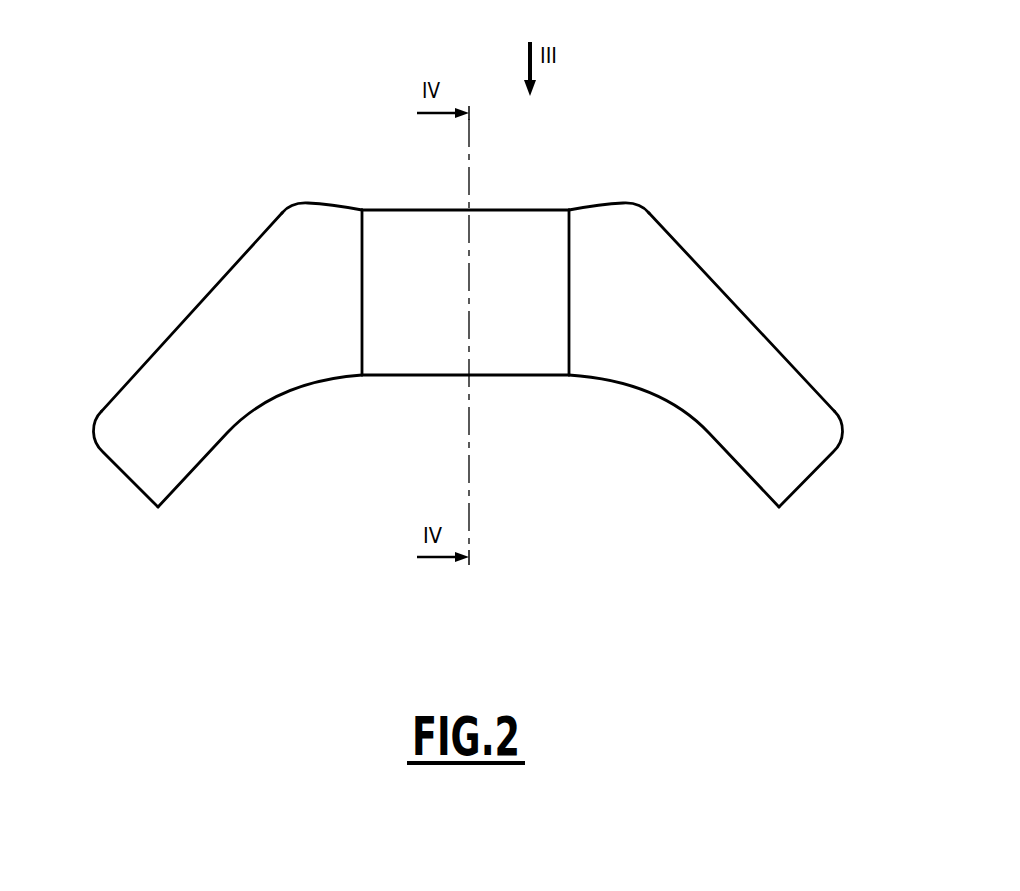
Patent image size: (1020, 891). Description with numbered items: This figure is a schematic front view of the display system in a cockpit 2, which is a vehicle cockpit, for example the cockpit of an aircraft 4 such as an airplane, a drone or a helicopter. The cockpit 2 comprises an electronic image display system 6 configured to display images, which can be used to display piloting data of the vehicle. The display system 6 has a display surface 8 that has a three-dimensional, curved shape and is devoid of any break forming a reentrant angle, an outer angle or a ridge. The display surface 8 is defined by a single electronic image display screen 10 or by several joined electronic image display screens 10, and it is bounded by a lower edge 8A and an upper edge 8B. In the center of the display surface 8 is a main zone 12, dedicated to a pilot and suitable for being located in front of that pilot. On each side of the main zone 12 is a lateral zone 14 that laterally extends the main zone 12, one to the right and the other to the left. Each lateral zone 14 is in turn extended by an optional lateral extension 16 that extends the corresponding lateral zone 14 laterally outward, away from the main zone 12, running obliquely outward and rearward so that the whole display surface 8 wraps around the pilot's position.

The cockpit 2 is at (712, 182).
The aircraft 4 is at (799, 181).
The electronic image display system 6 is at (324, 152).
The display surface 8 is at (537, 226).
The lower edge 8A is at (422, 377).
The upper edge 8B is at (400, 210).
The electronic image display screen 10 is at (219, 436).
The main zone 12 is at (491, 237).
The lateral zone 14 is at (277, 247).
The lateral extension 16 is at (137, 444).